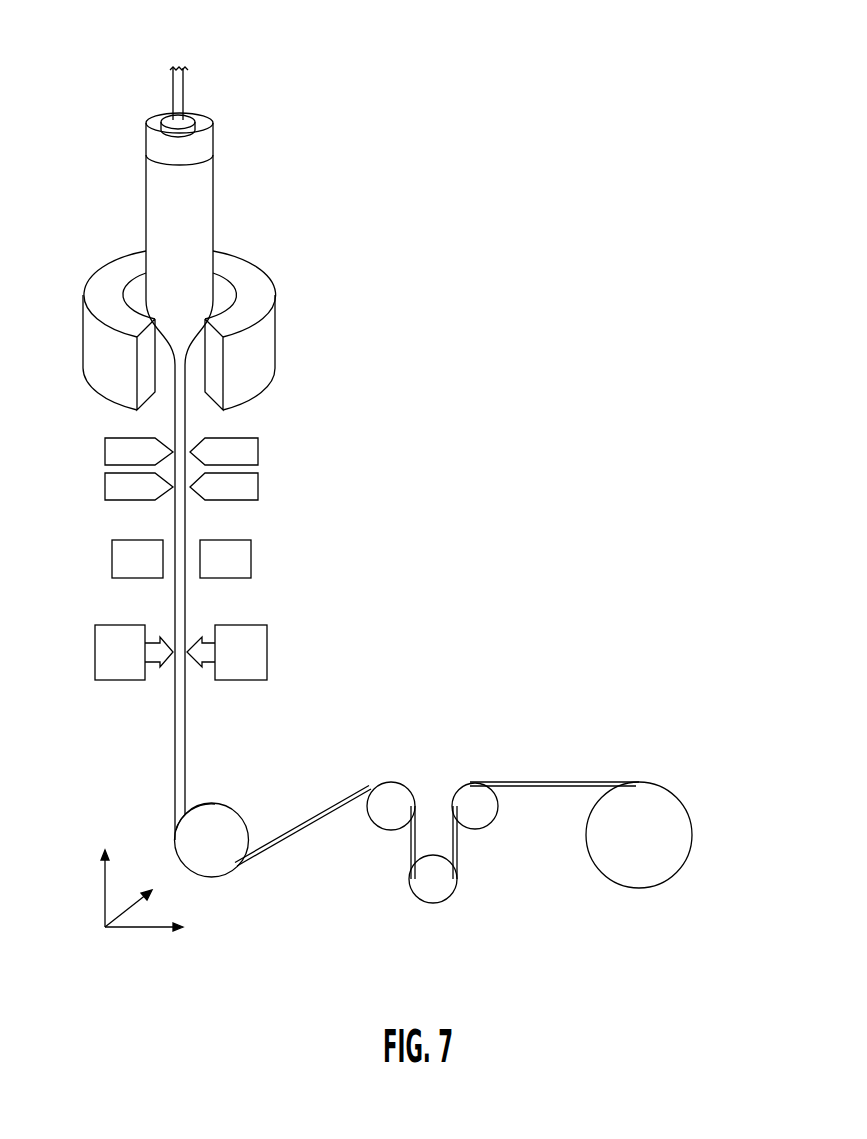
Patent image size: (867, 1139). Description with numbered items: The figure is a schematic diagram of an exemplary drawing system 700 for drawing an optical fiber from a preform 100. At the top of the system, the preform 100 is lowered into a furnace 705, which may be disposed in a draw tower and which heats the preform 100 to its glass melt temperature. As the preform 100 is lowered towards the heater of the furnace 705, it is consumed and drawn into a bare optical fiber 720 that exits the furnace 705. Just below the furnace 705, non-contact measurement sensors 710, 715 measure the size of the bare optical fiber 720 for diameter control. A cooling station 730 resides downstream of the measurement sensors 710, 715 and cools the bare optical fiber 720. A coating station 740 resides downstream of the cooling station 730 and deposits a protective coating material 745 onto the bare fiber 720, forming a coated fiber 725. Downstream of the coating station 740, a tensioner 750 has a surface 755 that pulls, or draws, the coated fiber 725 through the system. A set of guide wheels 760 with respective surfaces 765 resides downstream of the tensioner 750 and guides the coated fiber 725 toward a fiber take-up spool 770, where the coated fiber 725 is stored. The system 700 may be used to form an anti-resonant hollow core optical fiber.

The drawing system 700 is at (133, 72).
The preform 100 is at (165, 193).
The furnace 705 is at (267, 350).
The optical fiber 720 is at (187, 435).
The coated fiber 725 is at (174, 772).
The non-contact measurement sensor 710 is at (96, 436).
The non-contact measurement sensor 715 is at (96, 471).
The cooling station 730 is at (251, 563).
The coating station 740 is at (267, 657).
The protective coating material 745 is at (203, 663).
The tensioner 750 is at (227, 820).
The surface 755 is at (215, 805).
The guide wheels 760 is at (393, 825).
The surfaces 765 is at (378, 786).
The fiber take-up spool 770 is at (677, 810).